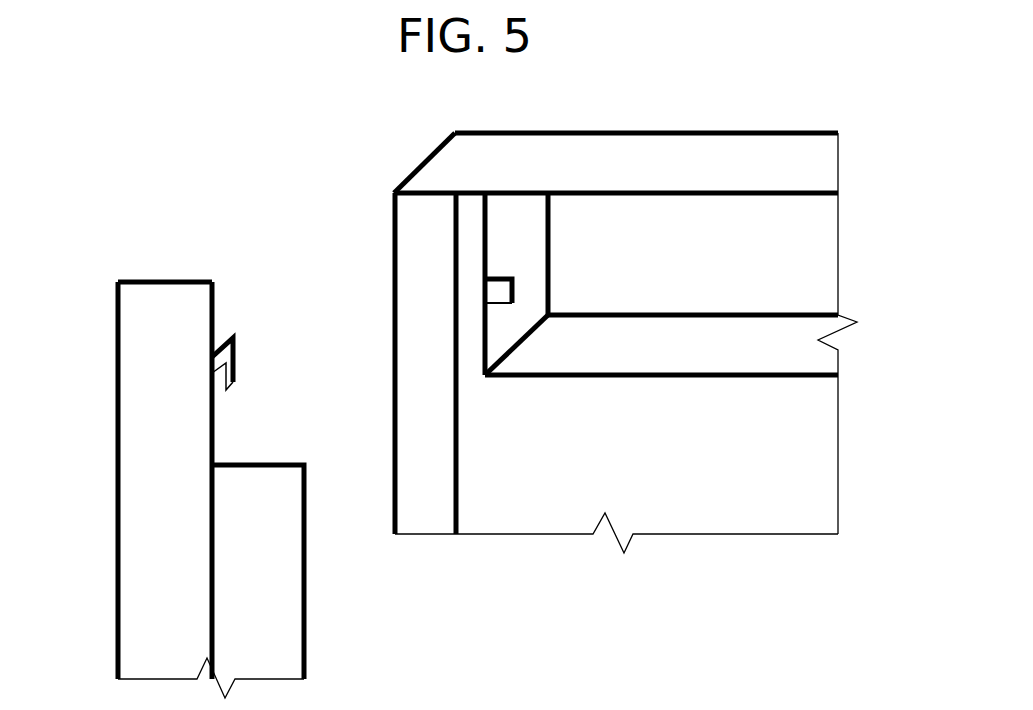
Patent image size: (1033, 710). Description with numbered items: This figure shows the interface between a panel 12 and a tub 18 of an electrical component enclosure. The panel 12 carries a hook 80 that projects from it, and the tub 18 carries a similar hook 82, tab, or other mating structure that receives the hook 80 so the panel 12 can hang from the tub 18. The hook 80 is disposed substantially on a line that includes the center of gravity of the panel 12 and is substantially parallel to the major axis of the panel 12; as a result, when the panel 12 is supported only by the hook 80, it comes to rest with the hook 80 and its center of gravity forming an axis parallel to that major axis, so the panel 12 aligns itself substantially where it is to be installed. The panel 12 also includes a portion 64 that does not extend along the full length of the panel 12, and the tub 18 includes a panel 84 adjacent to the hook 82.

The frame member 12 is at (118, 282).
The housing 18 is at (665, 132).
The panel 64 is at (305, 472).
The tab 80 is at (234, 357).
The catch 82 is at (513, 297).
The wall 84 is at (548, 237).